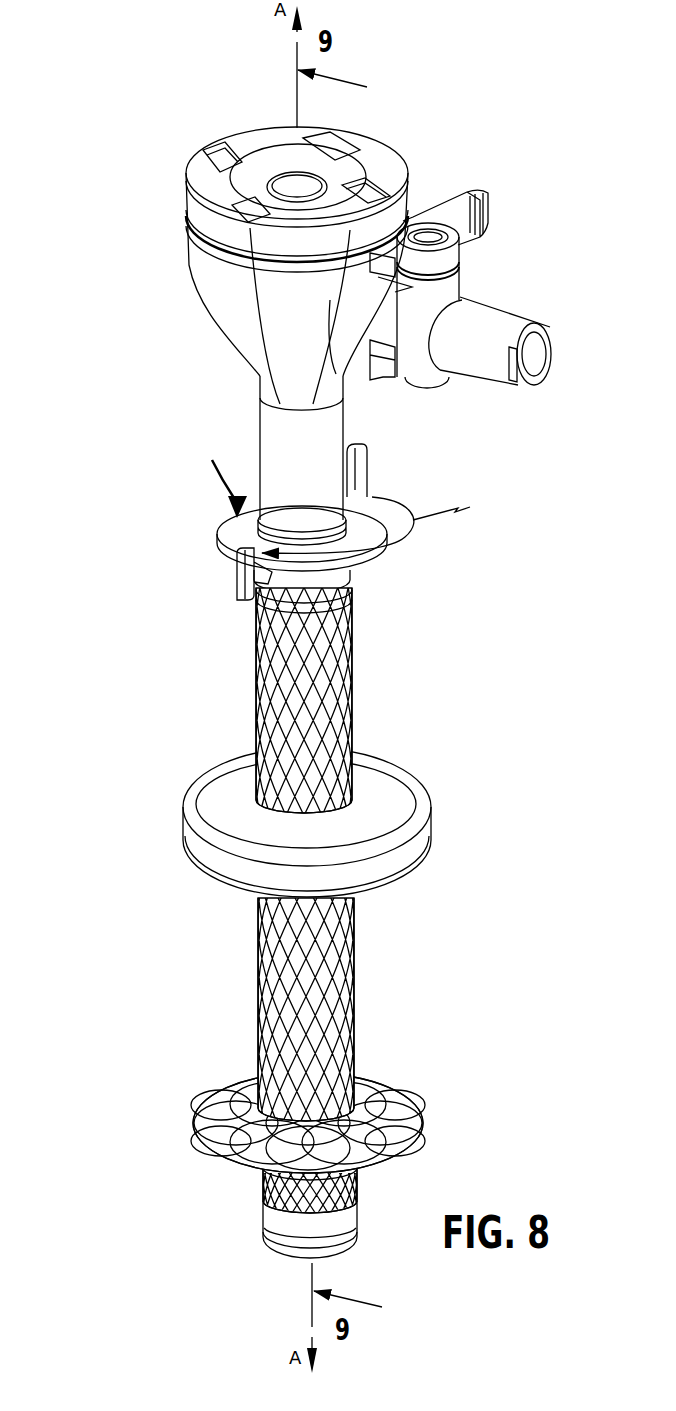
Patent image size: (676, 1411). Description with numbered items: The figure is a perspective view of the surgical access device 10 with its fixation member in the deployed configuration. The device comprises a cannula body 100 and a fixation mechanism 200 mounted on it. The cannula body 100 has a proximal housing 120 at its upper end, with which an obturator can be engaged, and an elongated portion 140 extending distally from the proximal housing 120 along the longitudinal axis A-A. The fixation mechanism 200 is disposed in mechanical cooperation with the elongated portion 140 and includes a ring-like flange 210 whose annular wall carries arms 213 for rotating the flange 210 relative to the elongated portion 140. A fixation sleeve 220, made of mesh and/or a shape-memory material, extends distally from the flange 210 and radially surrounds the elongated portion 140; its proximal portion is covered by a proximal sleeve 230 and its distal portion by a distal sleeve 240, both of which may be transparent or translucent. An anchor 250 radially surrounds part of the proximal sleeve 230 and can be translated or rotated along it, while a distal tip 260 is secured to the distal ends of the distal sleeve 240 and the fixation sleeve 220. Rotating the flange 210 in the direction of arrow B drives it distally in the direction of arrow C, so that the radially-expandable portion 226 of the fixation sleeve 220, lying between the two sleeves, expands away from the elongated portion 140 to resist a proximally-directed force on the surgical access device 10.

The surgical access device 10 is at (132, 195).
The cannula body 100 is at (178, 398).
The proximal housing 120 is at (203, 278).
The elongated portion 140 is at (275, 450).
The fixation mechanism 200 is at (225, 645).
The flange 210 is at (363, 518).
The arms 213 is at (235, 575).
The fixation sleeve 220 is at (267, 1012).
The radially-expandable portion 226 is at (198, 1132).
The proximal sleeve 230 is at (258, 970).
The distal sleeve 240 is at (267, 1190).
The anchor 250 is at (197, 833).
The distal tip 260 is at (270, 1228).